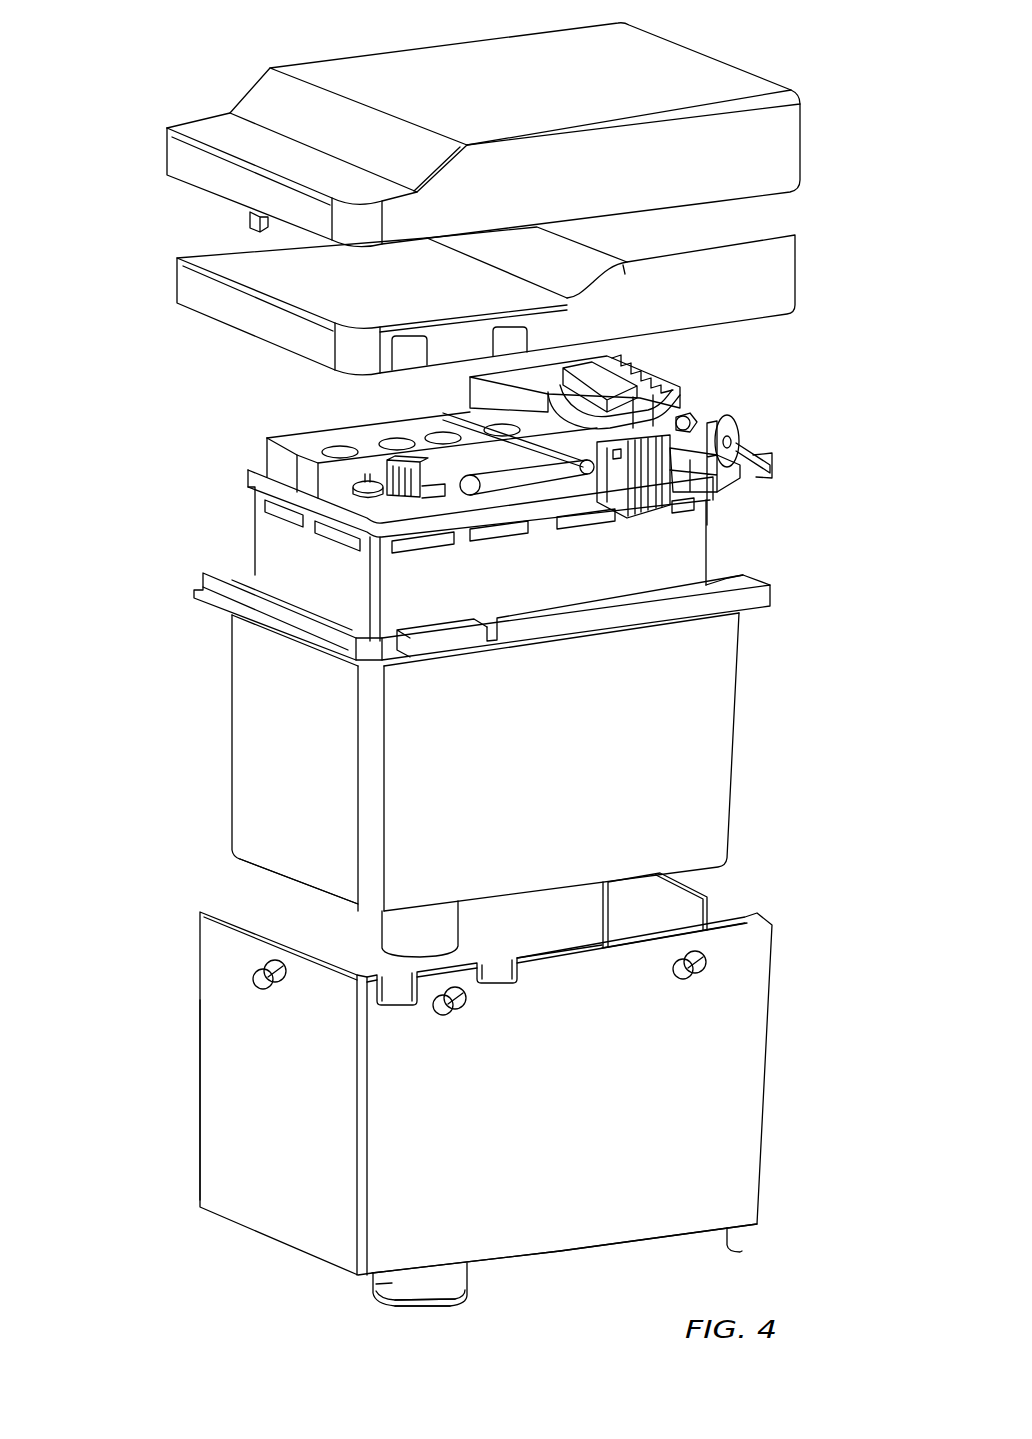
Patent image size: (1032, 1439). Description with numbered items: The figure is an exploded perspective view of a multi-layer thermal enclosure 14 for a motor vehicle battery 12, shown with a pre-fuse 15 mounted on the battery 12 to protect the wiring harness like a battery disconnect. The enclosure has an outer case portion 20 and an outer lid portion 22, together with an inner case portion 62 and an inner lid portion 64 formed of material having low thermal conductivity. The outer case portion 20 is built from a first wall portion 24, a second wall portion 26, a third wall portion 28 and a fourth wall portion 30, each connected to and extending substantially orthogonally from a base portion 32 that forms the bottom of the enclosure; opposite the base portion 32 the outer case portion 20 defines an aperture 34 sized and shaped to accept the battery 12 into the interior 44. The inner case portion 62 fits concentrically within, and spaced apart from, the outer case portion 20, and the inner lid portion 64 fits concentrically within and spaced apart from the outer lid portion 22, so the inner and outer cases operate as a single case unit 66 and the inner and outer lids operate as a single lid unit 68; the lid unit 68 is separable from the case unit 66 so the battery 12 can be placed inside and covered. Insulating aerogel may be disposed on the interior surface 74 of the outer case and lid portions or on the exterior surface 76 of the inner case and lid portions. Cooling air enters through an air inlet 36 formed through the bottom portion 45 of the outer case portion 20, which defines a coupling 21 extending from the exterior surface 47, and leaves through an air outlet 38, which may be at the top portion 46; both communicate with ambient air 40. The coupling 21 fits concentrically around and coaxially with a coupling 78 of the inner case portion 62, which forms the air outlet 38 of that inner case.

The battery 12 is at (505, 596).
The thermal enclosure 14 is at (206, 461).
The pre-fuse 15 is at (682, 412).
The outer case portion 20 is at (748, 1102).
The coupling 21 is at (375, 1282).
The outer lid portion 22 is at (427, 60).
The first wall portion 24 is at (272, 1170).
The second wall portion 26 is at (580, 1233).
The third wall portion 28 is at (698, 907).
The fourth wall portion 30 is at (270, 928).
The base portion 32 is at (742, 1251).
The aperture 34 is at (241, 880).
The air inlet 36 is at (425, 1308).
The air outlet 38 is at (542, 1292).
The ambient air 40 is at (623, 1336).
The interior 44 is at (222, 922).
The bottom portion 45 is at (790, 1165).
The top portion 46 is at (787, 993).
The exterior surface 47 is at (326, 1216).
The inner case portion 62 is at (722, 715).
The inner lid portion 64 is at (775, 276).
The case unit 66 is at (158, 525).
The lid unit 68 is at (135, 51).
The interior surface 74 is at (525, 932).
The exterior surface 76 is at (453, 856).
The coupling 78 is at (437, 1003).